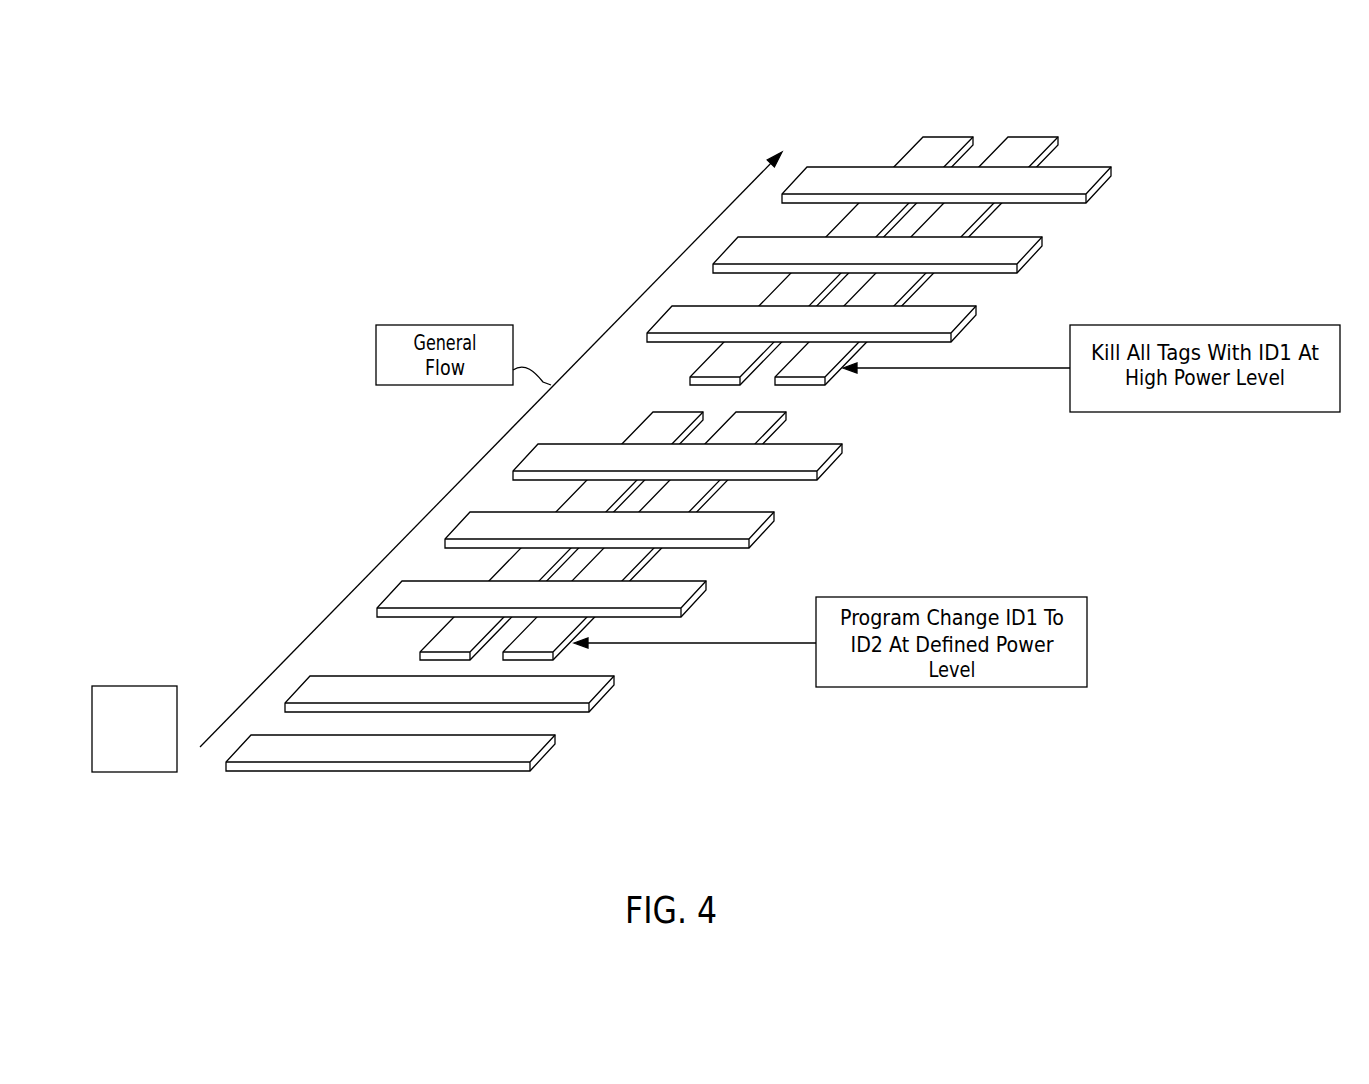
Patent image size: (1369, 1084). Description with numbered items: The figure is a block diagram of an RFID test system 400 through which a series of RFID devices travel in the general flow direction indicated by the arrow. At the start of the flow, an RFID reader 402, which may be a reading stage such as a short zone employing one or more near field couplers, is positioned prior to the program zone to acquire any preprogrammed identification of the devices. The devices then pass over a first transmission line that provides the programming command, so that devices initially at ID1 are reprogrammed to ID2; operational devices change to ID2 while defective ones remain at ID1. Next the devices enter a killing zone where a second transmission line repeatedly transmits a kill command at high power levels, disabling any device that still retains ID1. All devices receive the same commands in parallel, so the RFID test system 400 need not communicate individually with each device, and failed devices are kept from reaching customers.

The RFID test system 400 is at (725, 752).
The RFID reader 402 is at (163, 686).